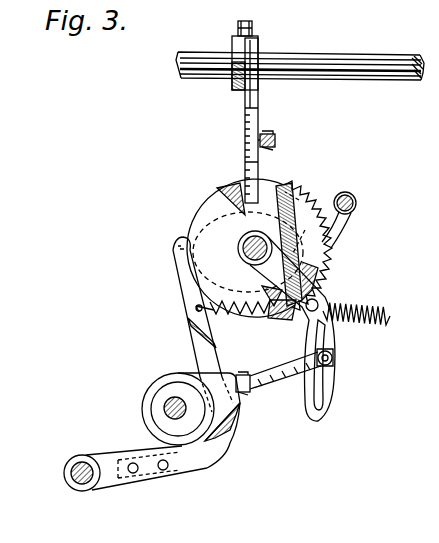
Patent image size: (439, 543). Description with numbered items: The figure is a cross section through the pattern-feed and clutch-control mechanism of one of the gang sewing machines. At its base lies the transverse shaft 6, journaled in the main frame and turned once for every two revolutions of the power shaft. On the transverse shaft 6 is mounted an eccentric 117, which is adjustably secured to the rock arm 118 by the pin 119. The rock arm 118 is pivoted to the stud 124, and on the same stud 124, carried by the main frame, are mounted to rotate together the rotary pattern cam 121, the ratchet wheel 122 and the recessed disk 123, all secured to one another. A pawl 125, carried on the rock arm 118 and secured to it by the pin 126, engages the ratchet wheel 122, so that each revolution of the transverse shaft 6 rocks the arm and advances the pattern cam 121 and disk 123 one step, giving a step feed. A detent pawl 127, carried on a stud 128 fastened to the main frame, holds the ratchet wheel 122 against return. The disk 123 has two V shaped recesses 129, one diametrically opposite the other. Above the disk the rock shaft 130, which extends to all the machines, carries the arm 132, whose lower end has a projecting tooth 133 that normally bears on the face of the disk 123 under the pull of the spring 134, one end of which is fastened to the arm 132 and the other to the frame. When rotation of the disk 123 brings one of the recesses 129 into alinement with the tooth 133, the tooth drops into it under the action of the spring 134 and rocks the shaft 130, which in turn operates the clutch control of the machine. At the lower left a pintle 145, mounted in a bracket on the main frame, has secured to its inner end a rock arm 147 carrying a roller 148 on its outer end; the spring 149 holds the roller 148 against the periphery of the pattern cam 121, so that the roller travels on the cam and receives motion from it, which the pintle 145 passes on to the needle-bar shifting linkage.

The transverse shaft 6 is at (170, 406).
The eccentric 117 is at (185, 383).
The rock arm 118 is at (338, 340).
The pin 119 is at (340, 366).
The rotary pattern cam 121 is at (299, 200).
The ratchet wheel 122 is at (327, 262).
The recessed disk 123 is at (204, 213).
The stud 124 is at (244, 244).
The pawl 125 is at (288, 320).
The pin 126 is at (318, 305).
The detent pawl 127 is at (336, 232).
The stud 128 is at (357, 205).
The V shaped recess 129 is at (232, 187).
The rock shaft 130 is at (355, 58).
The arm 132 is at (251, 118).
The projecting tooth 133 is at (260, 175).
The spring 134 is at (276, 139).
The pintle 145 is at (78, 474).
The rock arm 147 is at (232, 432).
The roller 148 is at (172, 243).
The spring 149 is at (384, 307).